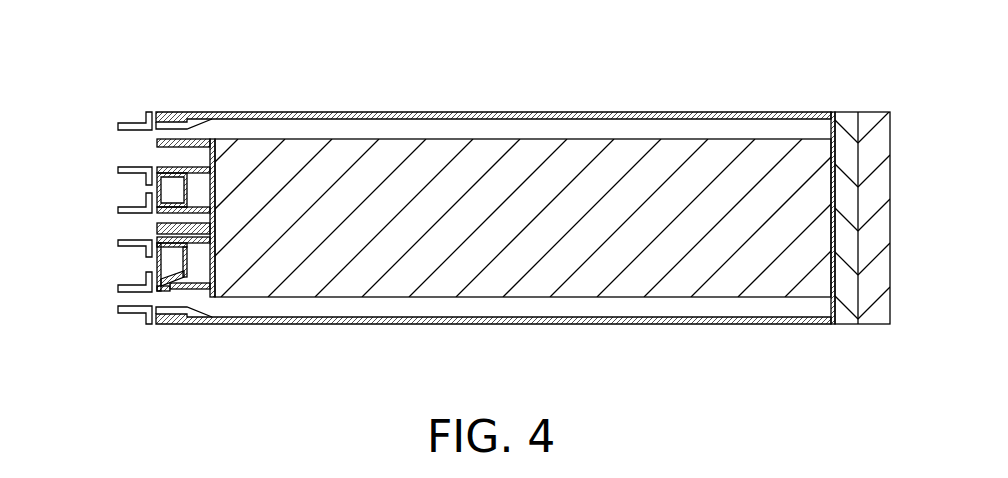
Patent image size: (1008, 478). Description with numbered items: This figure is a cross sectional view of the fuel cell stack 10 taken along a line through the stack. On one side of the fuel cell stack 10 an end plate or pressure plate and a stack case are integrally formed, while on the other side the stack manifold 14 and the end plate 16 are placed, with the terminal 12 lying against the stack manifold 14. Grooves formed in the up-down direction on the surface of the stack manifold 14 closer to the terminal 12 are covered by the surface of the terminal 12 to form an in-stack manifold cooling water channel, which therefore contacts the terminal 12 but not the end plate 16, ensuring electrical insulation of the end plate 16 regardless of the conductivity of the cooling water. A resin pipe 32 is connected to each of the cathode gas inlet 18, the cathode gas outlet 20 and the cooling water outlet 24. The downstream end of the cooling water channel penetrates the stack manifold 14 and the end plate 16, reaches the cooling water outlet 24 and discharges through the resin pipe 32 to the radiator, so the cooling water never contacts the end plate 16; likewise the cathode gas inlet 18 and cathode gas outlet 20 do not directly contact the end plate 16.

The fuel cell stack 10 is at (507, 172).
The terminal 12 is at (228, 148).
The stack manifold 14 is at (194, 114).
The end plate 16 is at (167, 267).
The cathode gas inlet 18 is at (130, 301).
The cathode gas outlet 20 is at (133, 150).
The cooling water outlet 24 is at (132, 225).
The resin pipe 32 is at (124, 124).